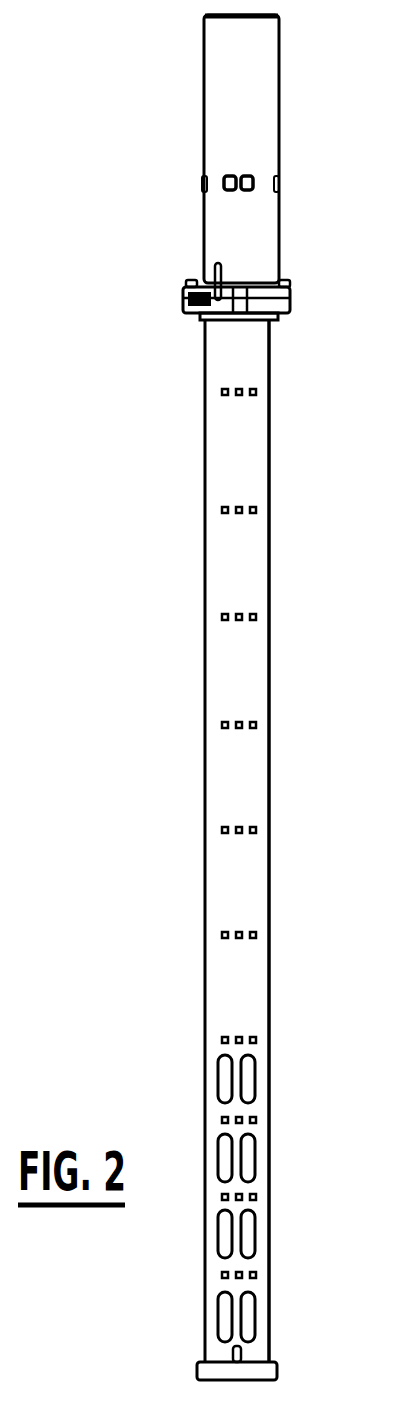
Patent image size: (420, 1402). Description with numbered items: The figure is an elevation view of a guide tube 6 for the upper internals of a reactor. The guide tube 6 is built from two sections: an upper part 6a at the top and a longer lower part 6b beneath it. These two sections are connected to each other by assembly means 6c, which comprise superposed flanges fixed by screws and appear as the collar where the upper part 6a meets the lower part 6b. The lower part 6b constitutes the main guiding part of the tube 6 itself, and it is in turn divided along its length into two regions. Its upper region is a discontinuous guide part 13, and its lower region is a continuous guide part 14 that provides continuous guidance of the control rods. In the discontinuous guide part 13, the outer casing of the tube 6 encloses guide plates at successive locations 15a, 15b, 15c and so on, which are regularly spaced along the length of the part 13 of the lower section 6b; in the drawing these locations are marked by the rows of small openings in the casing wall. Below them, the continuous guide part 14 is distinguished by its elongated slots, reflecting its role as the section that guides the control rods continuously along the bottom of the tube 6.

The guide tube 6 is at (235, 697).
The upper part 6a is at (262, 103).
The lower part 6b is at (262, 536).
The assembly means 6c is at (290, 290).
The discontinuous guide part 13 is at (218, 766).
The continuous guide part 14 is at (255, 1128).
The guide plate location 15a is at (222, 391).
The guide plate location 15b is at (222, 509).
The guide plate location 15c is at (222, 617).